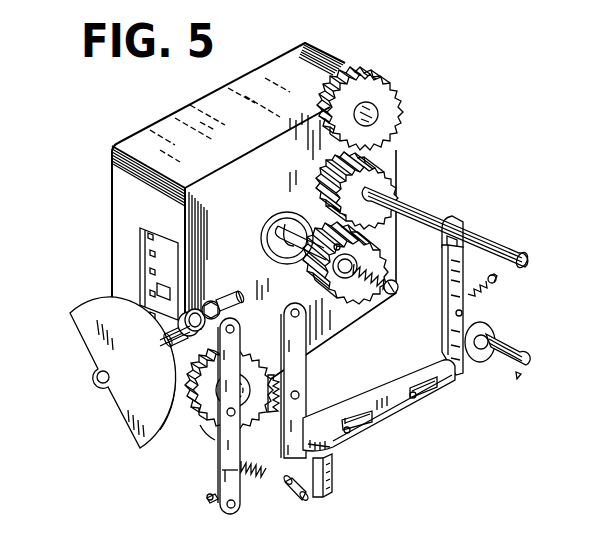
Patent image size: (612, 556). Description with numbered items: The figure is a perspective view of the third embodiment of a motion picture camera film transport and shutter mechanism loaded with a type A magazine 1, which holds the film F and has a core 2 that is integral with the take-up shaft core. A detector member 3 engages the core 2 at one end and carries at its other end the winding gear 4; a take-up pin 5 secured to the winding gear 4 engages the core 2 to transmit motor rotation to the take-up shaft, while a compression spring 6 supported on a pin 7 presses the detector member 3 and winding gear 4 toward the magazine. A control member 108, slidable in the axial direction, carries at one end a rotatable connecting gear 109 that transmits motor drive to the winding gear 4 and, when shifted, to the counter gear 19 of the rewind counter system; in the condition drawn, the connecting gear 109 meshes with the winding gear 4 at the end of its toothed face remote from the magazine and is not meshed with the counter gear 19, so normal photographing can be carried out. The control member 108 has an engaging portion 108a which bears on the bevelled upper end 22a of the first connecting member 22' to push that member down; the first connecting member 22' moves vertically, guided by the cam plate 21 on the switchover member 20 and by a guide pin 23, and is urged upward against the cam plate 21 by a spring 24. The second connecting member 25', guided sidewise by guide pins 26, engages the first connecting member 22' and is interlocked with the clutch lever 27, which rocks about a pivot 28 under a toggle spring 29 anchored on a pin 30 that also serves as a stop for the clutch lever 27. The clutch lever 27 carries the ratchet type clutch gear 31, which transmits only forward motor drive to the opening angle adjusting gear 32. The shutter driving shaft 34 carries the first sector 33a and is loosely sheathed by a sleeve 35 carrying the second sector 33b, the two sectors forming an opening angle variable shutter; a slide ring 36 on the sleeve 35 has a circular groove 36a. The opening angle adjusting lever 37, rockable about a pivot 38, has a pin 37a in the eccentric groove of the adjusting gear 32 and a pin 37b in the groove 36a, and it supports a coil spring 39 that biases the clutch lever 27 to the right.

The type A magazine 1 is at (118, 188).
The film F is at (147, 257).
The counter gear 19 is at (384, 96).
The connecting gear 109 is at (388, 180).
The control member 108 is at (438, 218).
The engaging portion 108a is at (452, 250).
The one end of first connecting member 22a is at (443, 253).
The first connecting member 22' is at (431, 310).
The spring 24 is at (492, 288).
The core 2 is at (270, 238).
The detector member 3 is at (283, 218).
The take-up pin 5 is at (318, 224).
The winding gear 4 is at (330, 303).
The compression spring 6 is at (358, 295).
The guide pin 23 is at (398, 290).
The pin 7 is at (389, 297).
The opening angle adjusting gear 32 is at (195, 402).
The sleeve 35 is at (163, 341).
The slide ring 36 is at (189, 310).
The circular groove 36a is at (212, 300).
The shutter driving shaft 34 is at (250, 278).
The pivot 28 is at (282, 310).
The clutch gear 31 is at (316, 381).
The clutch lever 27 is at (322, 412).
The coil spring 39 is at (250, 480).
The pivot 38 is at (208, 500).
The toggle spring 29 is at (294, 500).
The second connecting member 25' is at (379, 414).
The guide pins 26 is at (416, 398).
The pin 30 is at (310, 497).
The cam plate 21 is at (479, 364).
The switchover member 20 is at (530, 358).
The first sector 33a is at (90, 333).
The second sector 33b is at (125, 300).
The pin 37b is at (185, 355).
The pin 37a is at (204, 426).
The opening angle adjusting lever 37 is at (232, 476).